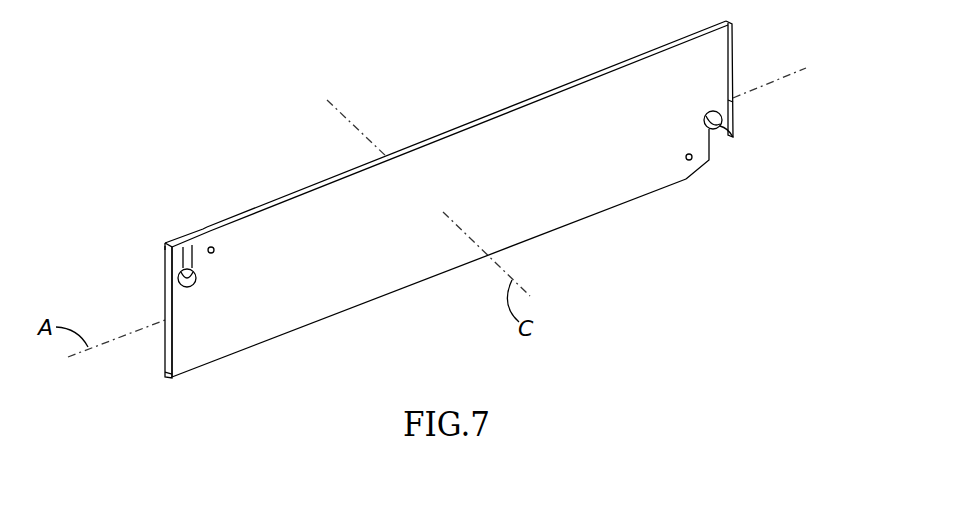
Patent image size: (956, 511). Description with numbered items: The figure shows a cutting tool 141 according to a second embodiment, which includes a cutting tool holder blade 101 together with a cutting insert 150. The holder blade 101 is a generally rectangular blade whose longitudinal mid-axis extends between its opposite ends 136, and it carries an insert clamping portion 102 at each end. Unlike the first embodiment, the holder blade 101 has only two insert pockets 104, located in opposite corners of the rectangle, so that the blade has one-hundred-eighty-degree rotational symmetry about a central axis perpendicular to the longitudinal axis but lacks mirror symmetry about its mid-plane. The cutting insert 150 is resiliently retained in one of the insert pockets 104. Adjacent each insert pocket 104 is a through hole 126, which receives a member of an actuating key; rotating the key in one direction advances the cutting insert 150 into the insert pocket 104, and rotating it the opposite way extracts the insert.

The cutting tool holder blade 101 is at (427, 118).
The insert clamping portion 102 is at (141, 297).
The insert pocket 104 is at (155, 245).
The through hole 126 is at (226, 257).
The opposite ends 136 is at (150, 375).
The cutting tool 141 is at (268, 109).
The cutting insert 150 is at (176, 234).